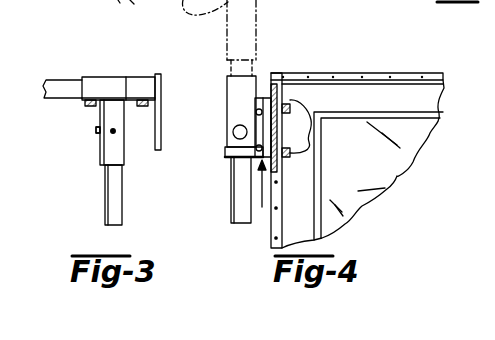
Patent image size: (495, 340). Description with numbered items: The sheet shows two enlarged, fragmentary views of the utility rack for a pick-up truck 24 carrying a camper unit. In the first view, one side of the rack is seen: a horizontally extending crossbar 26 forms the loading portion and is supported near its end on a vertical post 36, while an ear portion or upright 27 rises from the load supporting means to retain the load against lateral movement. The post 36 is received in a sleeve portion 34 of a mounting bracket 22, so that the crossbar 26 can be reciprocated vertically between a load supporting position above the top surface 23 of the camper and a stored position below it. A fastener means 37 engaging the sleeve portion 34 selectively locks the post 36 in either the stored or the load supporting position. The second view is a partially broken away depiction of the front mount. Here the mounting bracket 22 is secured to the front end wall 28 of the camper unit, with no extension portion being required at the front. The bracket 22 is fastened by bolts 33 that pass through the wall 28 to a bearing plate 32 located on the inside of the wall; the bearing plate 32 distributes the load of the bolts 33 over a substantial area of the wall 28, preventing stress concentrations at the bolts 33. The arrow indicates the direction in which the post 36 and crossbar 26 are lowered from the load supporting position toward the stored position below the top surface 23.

In FIG. 4, the mounting bracket 22 is at (262, 207).
In FIG. 4, the top surface 23 is at (273, 80).
In FIG. 4, the pick-up truck 24 is at (397, 182).
In FIG. 3, the crossbar 26 is at (62, 88).
In FIG. 3, the upright 27 is at (226, 128).
In FIG. 4, the upright 27 is at (257, 31).
In FIG. 4, the front end wall 28 is at (271, 242).
In FIG. 4, the bearing plate 32 is at (295, 130).
In FIG. 4, the bolt 33 is at (290, 108).
In FIG. 3, the sleeve portion 34 is at (100, 159).
In FIG. 4, the sleeve portion 34 is at (232, 155).
In FIG. 3, the vertical post 36 is at (234, 199).
In FIG. 4, the vertical post 36 is at (241, 190).
In FIG. 3, the fastener means 37 is at (96, 130).